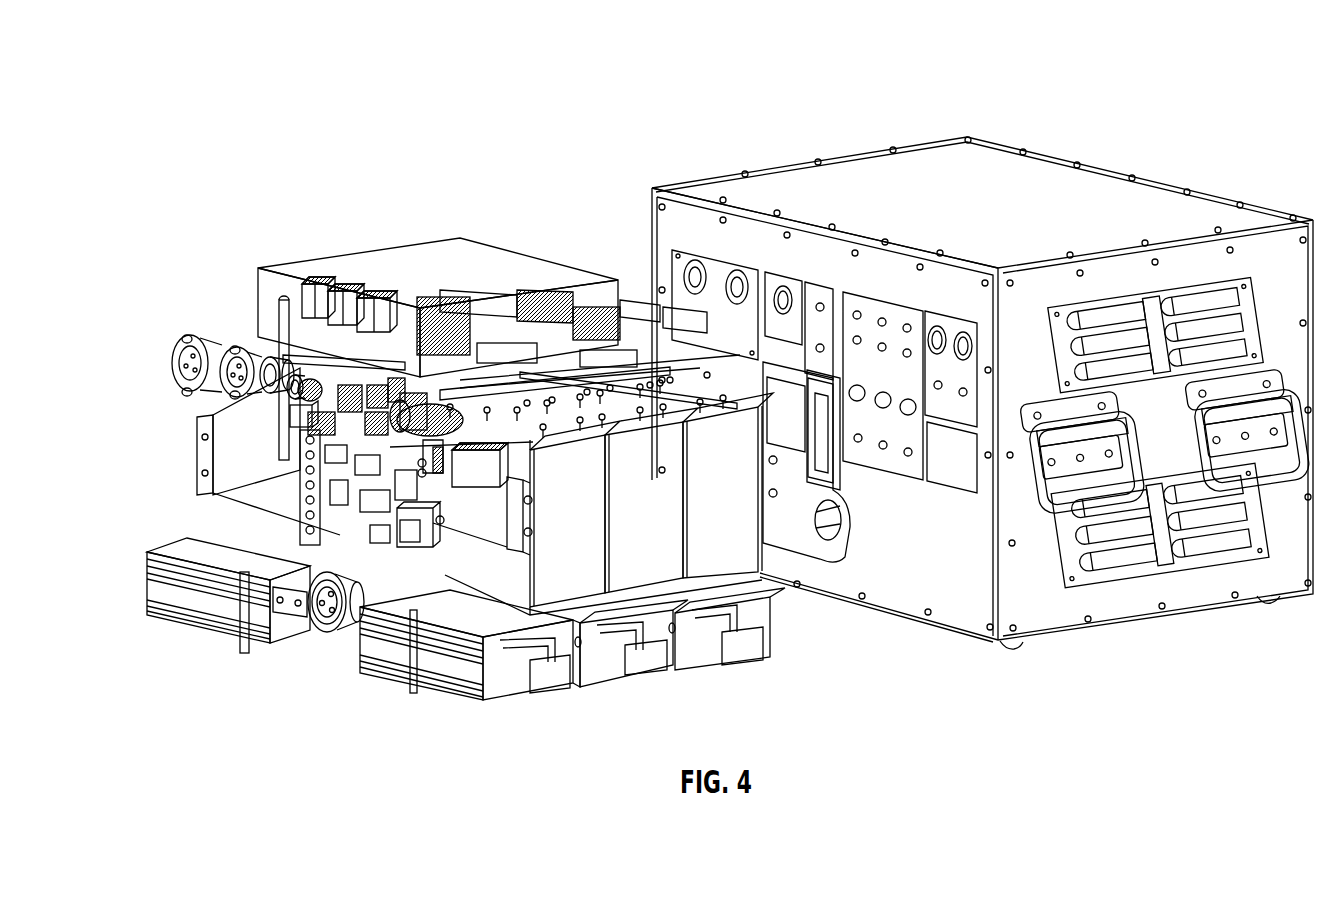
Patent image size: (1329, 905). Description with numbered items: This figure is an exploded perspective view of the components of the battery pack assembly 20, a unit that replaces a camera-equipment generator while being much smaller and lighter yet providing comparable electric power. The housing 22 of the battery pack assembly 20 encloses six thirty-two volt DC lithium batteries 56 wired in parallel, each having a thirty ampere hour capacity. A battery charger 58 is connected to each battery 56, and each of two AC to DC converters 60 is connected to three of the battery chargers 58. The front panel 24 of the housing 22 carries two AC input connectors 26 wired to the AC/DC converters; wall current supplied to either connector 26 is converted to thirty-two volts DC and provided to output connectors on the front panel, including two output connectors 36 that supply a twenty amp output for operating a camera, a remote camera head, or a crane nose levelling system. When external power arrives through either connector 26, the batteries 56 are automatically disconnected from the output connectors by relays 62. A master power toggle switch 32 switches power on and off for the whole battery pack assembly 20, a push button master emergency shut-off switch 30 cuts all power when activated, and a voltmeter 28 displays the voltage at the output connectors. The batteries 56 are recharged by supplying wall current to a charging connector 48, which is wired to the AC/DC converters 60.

The battery pack assembly 20 is at (1246, 80).
The housing 22 is at (1092, 187).
The front panel 24 is at (680, 218).
The AC input connector 26 is at (177, 338).
The voltmeter 28 is at (267, 387).
The master emergency shut-off switch 30 is at (300, 390).
The master power toggle switch 32 is at (298, 420).
The output connector 36 is at (300, 477).
The charging connector 48 is at (330, 630).
The battery 56 is at (550, 583).
The battery charger 58 is at (497, 692).
The AC to DC converter 60 is at (475, 257).
The relay 62 is at (313, 273).